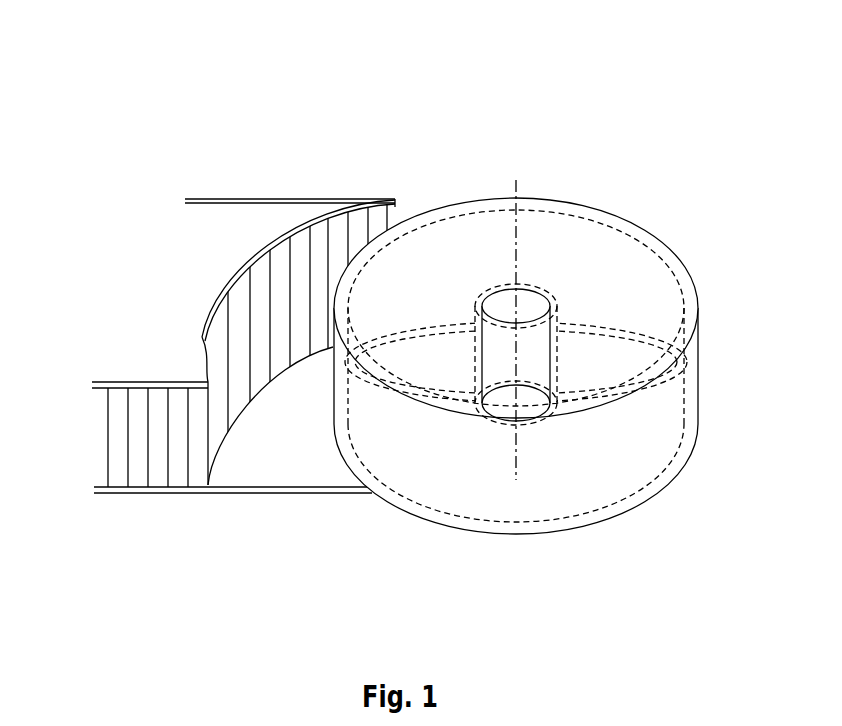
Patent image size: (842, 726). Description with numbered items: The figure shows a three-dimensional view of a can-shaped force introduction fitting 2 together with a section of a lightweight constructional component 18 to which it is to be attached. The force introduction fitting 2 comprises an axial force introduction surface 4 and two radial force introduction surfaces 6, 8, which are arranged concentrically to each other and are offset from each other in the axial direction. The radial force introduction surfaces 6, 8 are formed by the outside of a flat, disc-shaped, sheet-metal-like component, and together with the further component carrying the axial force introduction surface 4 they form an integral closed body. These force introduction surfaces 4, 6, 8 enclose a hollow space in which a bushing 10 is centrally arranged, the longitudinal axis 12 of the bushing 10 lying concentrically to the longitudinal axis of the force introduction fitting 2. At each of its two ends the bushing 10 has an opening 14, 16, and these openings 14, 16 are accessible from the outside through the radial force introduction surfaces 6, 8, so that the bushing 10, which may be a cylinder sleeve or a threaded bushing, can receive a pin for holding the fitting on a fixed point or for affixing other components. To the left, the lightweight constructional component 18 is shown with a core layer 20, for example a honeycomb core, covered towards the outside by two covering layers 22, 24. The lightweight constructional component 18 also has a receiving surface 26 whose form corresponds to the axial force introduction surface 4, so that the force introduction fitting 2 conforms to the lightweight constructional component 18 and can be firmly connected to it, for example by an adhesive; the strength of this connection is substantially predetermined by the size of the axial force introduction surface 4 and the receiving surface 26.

The force introduction fitting 2 is at (410, 316).
The axial force introduction surface 4 is at (559, 384).
The radial force introduction surface 6 is at (660, 309).
The radial force introduction surface 8 is at (424, 488).
The bushing 10 is at (528, 354).
The longitudinal axis 12 is at (519, 230).
The opening 14 is at (548, 410).
The opening 16 is at (490, 296).
The lightweight constructional component 18 is at (215, 347).
The core layer 20 is at (133, 438).
The covering layer 22 is at (236, 496).
The covering layer 24 is at (223, 223).
The receiving surface 26 is at (263, 358).